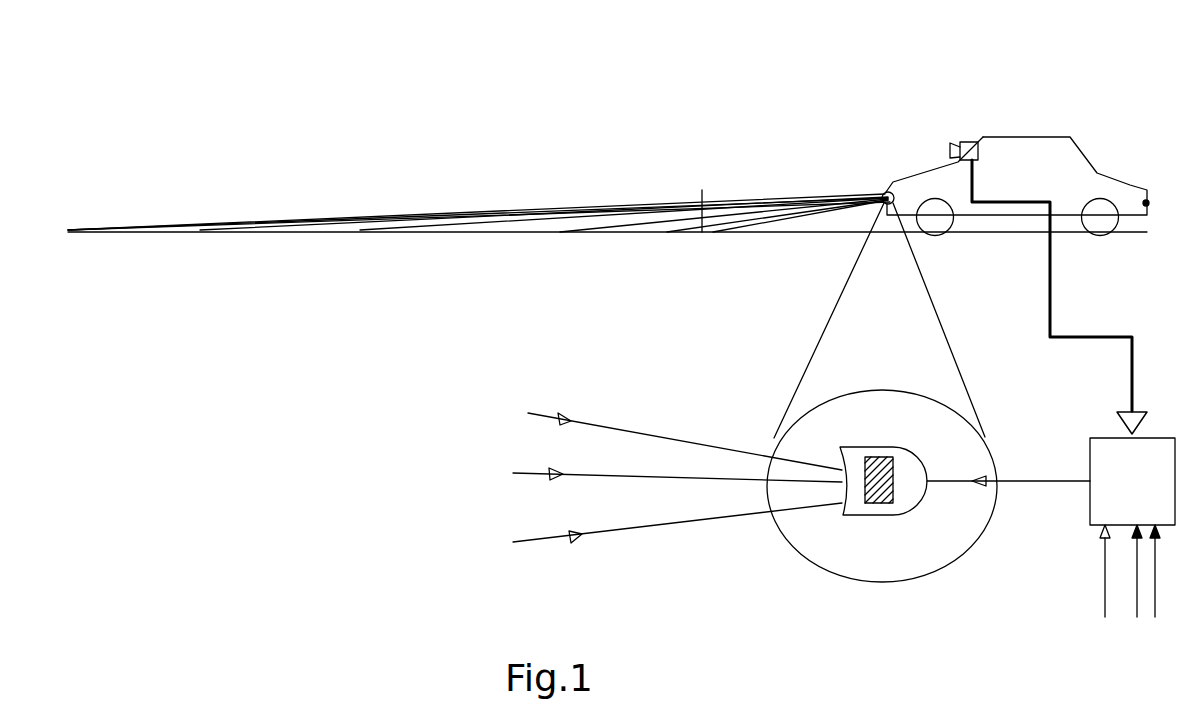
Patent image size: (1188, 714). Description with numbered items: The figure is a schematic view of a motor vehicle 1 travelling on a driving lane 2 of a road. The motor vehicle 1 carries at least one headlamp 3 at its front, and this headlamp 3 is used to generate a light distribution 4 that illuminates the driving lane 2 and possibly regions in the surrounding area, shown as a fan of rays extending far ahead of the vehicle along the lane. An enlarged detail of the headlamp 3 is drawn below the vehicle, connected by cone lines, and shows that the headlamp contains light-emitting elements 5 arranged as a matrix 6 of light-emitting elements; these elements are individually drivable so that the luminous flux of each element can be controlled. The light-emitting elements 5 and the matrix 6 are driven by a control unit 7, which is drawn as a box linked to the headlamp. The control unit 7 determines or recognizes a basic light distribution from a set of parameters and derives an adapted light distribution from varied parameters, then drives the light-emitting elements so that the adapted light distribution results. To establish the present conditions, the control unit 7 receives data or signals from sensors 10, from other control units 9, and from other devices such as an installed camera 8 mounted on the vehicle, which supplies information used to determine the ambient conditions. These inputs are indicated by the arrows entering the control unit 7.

The motor vehicle 1 is at (1073, 120).
The driving lane 2 is at (452, 233).
The headlamp 3 is at (886, 181).
The light distribution 4 is at (493, 187).
The light-emitting elements 5 is at (877, 515).
The matrix of light-emitting elements 6 is at (874, 411).
The control unit 7 is at (1141, 495).
The camera 8 is at (968, 141).
The control units 9 is at (1105, 589).
The sensors 10 is at (1145, 589).